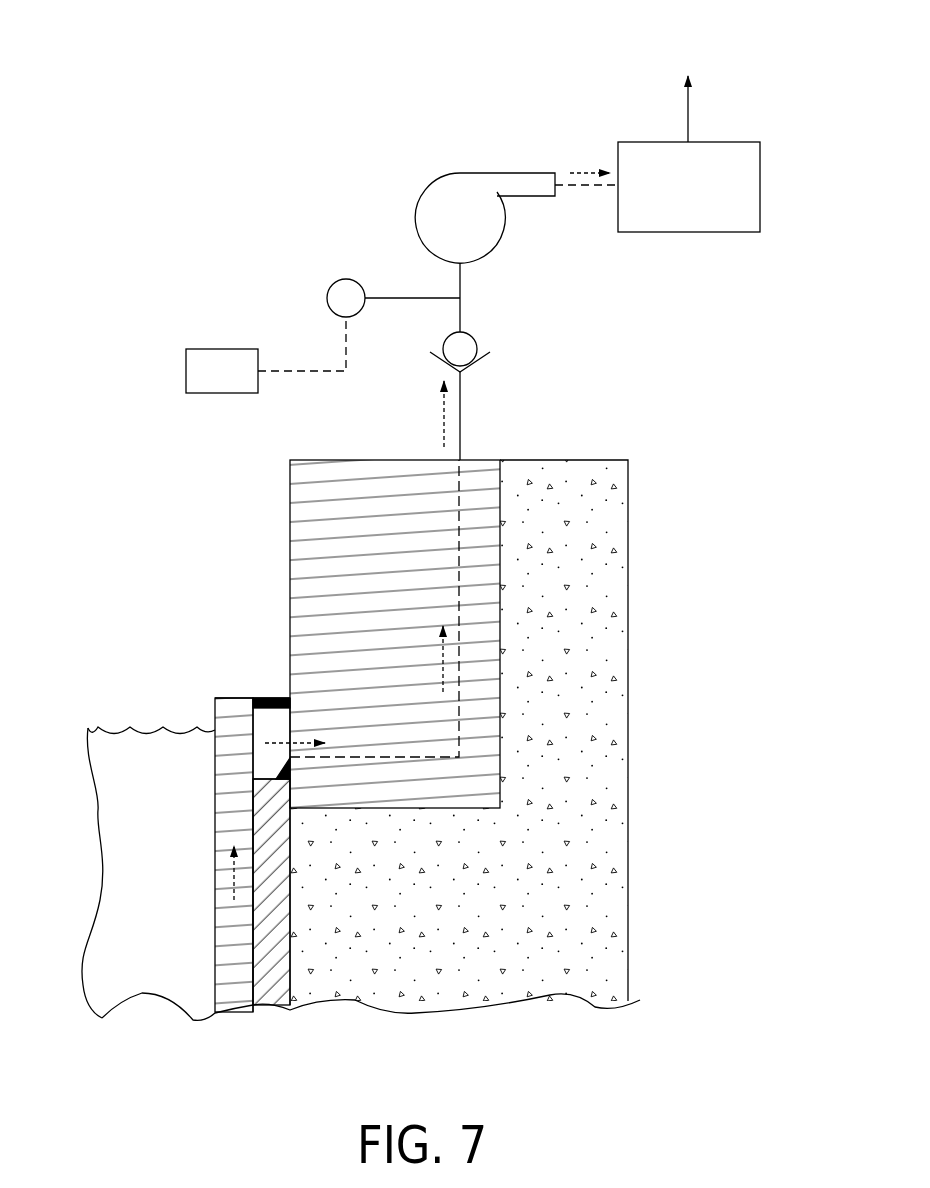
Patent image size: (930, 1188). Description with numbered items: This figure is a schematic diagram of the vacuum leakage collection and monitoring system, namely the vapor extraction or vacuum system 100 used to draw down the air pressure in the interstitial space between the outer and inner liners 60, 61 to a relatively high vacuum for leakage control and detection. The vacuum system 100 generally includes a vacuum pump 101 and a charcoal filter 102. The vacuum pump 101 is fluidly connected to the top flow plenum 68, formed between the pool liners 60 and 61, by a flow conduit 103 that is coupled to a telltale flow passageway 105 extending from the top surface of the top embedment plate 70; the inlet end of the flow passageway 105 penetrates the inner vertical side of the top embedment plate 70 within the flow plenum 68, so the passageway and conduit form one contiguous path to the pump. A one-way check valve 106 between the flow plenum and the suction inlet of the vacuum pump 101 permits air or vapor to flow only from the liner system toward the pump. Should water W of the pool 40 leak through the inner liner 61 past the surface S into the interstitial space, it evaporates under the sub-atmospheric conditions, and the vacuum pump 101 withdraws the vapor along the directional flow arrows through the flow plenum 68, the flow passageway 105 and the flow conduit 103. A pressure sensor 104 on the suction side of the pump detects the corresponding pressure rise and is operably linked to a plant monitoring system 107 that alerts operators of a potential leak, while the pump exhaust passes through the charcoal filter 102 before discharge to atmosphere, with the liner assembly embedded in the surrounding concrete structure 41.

The vacuum system 100 is at (390, 70).
The vacuum pump 101 is at (434, 177).
The charcoal filter 102 is at (725, 142).
The flow conduit 103 is at (460, 415).
The pressure sensor 104 is at (345, 279).
The flow passageway 105 is at (460, 512).
The valve 106 is at (483, 317).
The plant monitoring system 107 is at (266, 355).
The top embedment plate 70 is at (328, 494).
The concrete structure 41 is at (578, 707).
The water body 40 is at (119, 702).
The flow plenum 68 is at (268, 731).
The inner liner 61 is at (235, 912).
The outer liner 60 is at (275, 926).
The water surface S is at (171, 725).
The water W is at (146, 870).